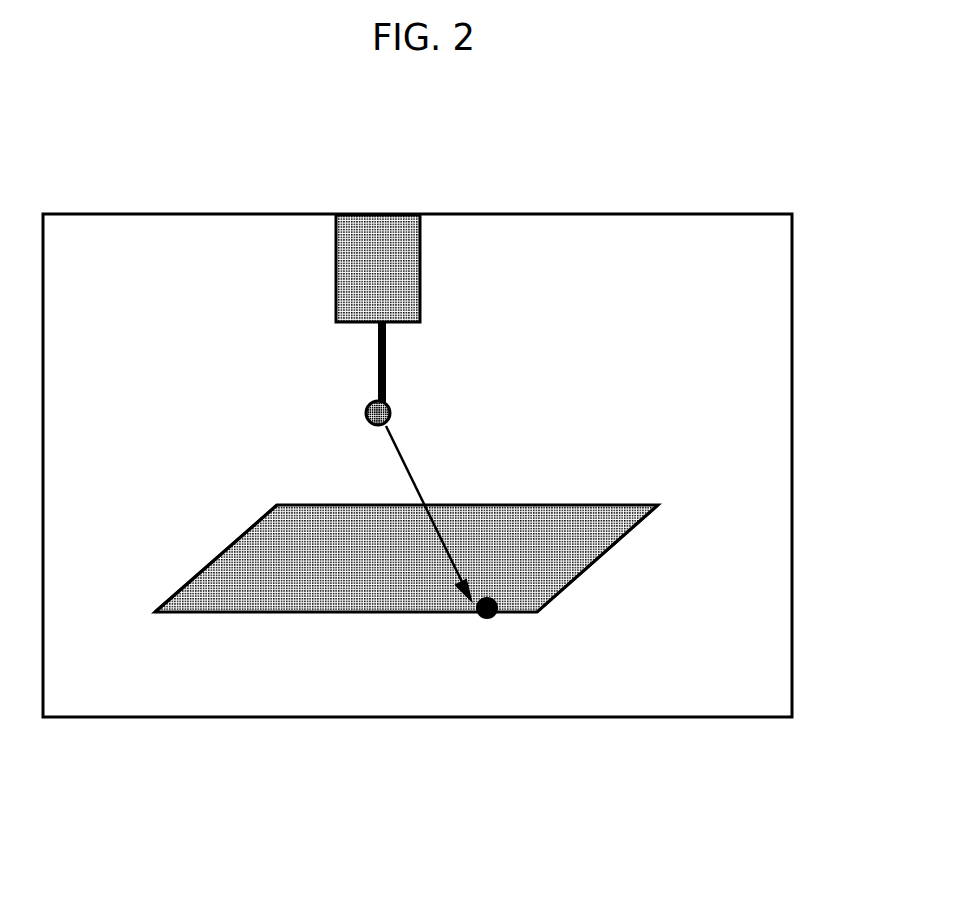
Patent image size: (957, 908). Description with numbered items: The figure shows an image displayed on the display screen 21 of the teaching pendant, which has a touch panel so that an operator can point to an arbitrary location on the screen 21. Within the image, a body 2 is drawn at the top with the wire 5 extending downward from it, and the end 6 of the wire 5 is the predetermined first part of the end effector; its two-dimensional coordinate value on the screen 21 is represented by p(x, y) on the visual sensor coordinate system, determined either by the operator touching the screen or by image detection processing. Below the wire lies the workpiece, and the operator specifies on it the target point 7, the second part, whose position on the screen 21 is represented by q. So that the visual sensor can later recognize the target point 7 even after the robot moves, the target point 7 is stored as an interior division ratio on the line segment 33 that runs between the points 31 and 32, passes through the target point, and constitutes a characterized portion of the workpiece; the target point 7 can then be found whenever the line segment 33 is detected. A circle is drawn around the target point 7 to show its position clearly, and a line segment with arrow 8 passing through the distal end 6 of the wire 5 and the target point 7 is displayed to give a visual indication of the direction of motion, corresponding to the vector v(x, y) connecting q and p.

The display screen 21 is at (616, 165).
The light source 2 is at (420, 275).
The wire 5 is at (385, 365).
The end of the wire 6 is at (366, 420).
The line segment with arrow 8 is at (395, 440).
The target point 7 is at (481, 620).
The point 31 is at (152, 612).
The point 32 is at (537, 612).
The line segment 33 is at (340, 612).